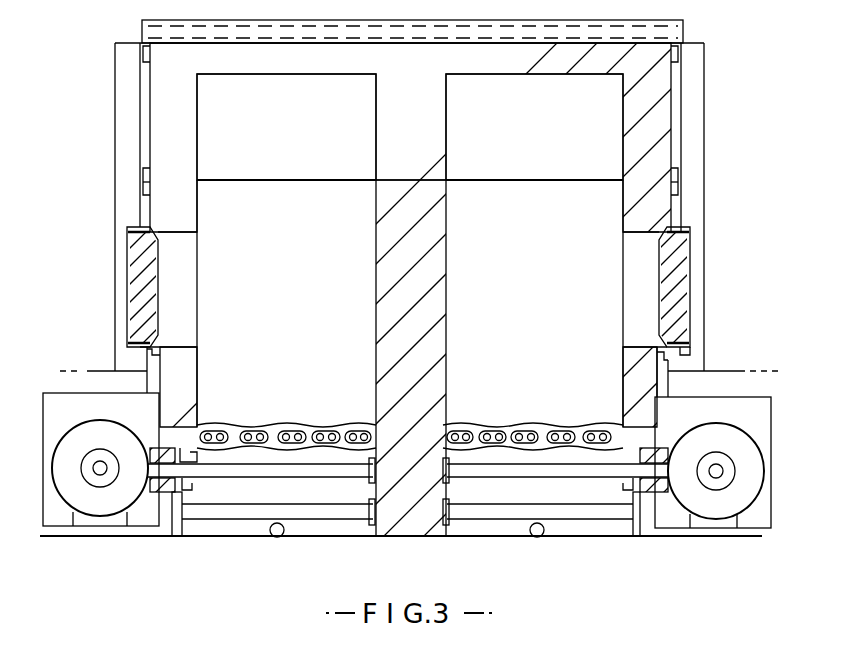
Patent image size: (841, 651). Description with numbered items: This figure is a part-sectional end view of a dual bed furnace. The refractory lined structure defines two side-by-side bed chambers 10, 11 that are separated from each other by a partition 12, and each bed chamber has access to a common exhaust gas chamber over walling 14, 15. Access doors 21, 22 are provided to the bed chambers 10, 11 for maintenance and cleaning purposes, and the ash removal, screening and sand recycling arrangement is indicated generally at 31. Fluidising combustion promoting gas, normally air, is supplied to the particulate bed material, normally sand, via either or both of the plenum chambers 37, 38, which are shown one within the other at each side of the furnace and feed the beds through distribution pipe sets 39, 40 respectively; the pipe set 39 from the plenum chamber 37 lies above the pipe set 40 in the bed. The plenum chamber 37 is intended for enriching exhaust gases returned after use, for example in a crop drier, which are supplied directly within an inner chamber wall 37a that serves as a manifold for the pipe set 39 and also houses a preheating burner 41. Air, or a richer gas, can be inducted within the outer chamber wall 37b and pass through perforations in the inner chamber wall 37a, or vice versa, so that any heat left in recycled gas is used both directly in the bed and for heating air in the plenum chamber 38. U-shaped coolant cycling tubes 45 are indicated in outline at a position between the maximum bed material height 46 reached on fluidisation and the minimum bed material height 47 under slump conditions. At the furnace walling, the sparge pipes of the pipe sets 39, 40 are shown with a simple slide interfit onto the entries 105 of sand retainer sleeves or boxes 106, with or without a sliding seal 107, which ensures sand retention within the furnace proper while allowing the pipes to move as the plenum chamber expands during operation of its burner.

The bed chamber 10 is at (539, 315).
The bed chamber 11 is at (301, 315).
The partition 12 is at (443, 295).
The walling 14 is at (560, 180).
The walling 15 is at (284, 180).
The access door 21 is at (678, 314).
The access door 22 is at (138, 298).
The ash removal, screening and sand recycling 31 is at (272, 538).
The plenum chamber 37 is at (101, 459).
The inner chamber wall 37a is at (125, 420).
The chamber wall 37b is at (90, 394).
The plenum chamber 38 is at (90, 379).
The distribution pipe set 39 is at (313, 471).
The distribution pipe set 40 is at (339, 488).
The preheating burner 41 is at (113, 478).
The U-shaped coolant cycling tubes 45 is at (300, 432).
The maximum bed material height 46 is at (227, 426).
The minimum bed material height 47 is at (313, 426).
The entries 105 is at (170, 494).
The sand retainer sleeves or boxes 106 is at (153, 490).
The sliding seal 107 is at (209, 425).